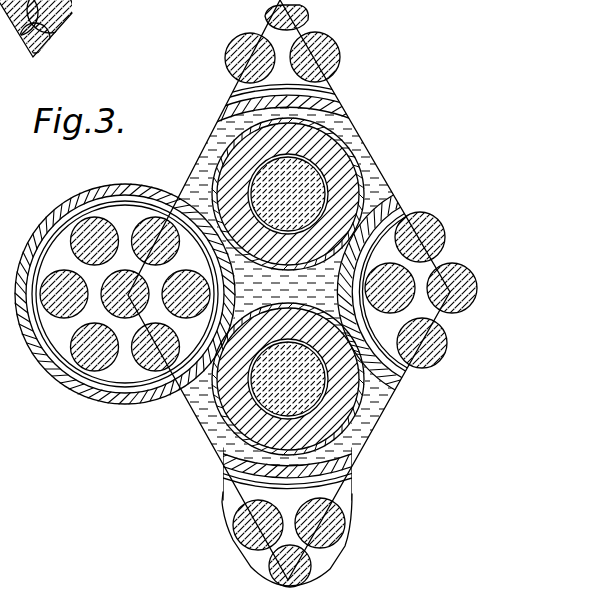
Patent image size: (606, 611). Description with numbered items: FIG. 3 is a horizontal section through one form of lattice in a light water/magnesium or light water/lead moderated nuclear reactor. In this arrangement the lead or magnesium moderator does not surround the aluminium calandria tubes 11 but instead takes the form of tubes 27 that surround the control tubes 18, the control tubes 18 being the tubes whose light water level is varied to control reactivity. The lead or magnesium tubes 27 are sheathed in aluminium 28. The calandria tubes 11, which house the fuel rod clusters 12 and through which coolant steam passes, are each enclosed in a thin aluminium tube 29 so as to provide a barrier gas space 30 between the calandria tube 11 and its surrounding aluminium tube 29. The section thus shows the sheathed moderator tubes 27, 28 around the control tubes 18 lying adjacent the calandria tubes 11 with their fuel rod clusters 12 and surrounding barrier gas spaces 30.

The control tube 18 is at (280, 160).
The lead or magnesium tube 27 is at (328, 162).
The aluminium sheath 28 is at (316, 124).
The thin aluminium tube 29 is at (253, 108).
The barrier gas space 30 is at (39, 356).
The calandria tube 11 is at (120, 388).
The fuel rod cluster 12 is at (97, 362).